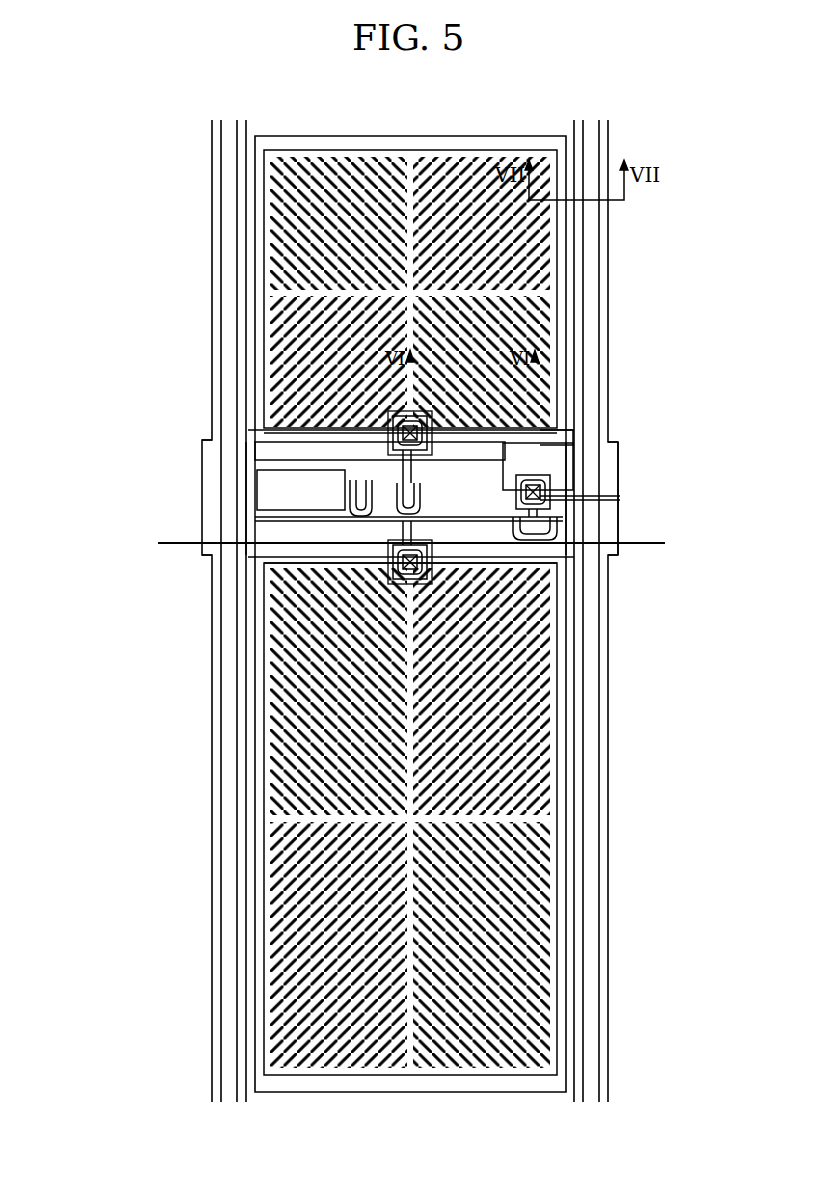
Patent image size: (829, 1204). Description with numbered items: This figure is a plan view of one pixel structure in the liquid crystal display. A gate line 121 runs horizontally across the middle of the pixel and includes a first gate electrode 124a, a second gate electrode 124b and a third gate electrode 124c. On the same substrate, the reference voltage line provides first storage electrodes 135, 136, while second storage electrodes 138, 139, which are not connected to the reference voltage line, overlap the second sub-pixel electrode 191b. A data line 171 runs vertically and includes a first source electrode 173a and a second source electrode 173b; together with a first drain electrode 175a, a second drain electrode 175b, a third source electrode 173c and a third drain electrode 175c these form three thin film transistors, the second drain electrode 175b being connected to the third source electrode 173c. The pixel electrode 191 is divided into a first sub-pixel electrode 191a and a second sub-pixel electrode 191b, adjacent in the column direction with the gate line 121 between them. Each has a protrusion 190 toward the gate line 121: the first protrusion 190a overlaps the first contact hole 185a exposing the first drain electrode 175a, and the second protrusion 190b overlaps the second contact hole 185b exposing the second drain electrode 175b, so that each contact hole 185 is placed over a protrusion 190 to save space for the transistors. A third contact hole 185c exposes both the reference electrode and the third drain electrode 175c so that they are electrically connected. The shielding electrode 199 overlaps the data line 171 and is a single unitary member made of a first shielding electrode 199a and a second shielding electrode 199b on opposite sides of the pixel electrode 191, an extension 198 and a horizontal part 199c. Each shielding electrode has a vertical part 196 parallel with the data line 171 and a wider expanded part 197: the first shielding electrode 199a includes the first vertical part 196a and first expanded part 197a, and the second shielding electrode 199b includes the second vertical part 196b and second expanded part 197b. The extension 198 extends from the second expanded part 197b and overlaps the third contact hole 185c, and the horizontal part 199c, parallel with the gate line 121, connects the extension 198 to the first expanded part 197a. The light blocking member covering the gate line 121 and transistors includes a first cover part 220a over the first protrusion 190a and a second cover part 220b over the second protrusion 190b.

The gate line 121 is at (180, 548).
The first gate electrode 124a is at (345, 535).
The second gate electrode 124b is at (360, 482).
The third gate electrode 124c is at (565, 500).
The first storage electrode 135 is at (575, 318).
The first storage electrode 136 is at (363, 136).
The second storage electrode 138 is at (575, 855).
The second storage electrode 139 is at (500, 1094).
The data line 171 is at (236, 168).
The first source electrode 173a is at (350, 537).
The second source electrode 173b is at (425, 540).
The third source electrode 173c is at (600, 549).
The first drain electrode 175a is at (335, 518).
The second drain electrode 175b is at (425, 555).
The third drain electrode 175c is at (600, 522).
The contact hole 185 is at (706, 1160).
The first contact hole 185a is at (414, 424).
The second contact hole 185b is at (430, 585).
The third contact hole 185c is at (550, 488).
The protrusion 190 is at (706, 1005).
The first protrusion 190a is at (435, 428).
The second protrusion 190b is at (430, 563).
The pixel electrode 191 is at (706, 935).
The first sub-pixel electrode 191a is at (265, 275).
The second sub-pixel electrode 191b is at (268, 740).
The vertical part 196 is at (92, 970).
The first vertical part 196a is at (70, 925).
The second vertical part 196b is at (212, 325).
The expanded part 197 is at (92, 1040).
The first expanded part 197a is at (202, 462).
The second expanded part 197b is at (620, 465).
The extension 198 is at (620, 445).
The shielding electrode 199 is at (92, 885).
The first shielding electrode 199a is at (245, 890).
The second shielding electrode 199b is at (608, 1043).
The horizontal part 199c is at (590, 445).
The first cover part 220a is at (432, 426).
The second cover part 220b is at (440, 575).